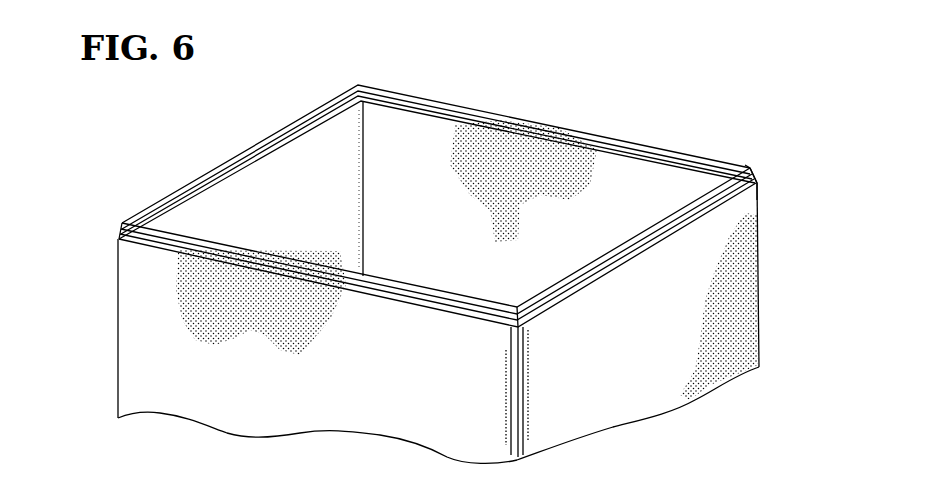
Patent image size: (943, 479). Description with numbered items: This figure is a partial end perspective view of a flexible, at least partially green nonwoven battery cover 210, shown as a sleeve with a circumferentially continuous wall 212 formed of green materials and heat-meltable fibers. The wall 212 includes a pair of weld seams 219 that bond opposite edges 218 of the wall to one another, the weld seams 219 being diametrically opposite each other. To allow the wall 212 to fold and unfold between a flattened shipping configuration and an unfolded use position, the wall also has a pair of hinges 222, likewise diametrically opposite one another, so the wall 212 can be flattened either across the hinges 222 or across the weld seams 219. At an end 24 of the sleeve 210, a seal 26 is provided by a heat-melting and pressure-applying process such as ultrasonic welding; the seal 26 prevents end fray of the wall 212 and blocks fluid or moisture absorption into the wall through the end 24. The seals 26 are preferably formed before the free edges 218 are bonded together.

The cover 210 is at (96, 184).
The seal 26 is at (252, 147).
The end 24 is at (752, 171).
The edges 218 is at (363, 158).
The weld seams 219 is at (363, 178).
The hinges 222 is at (118, 319).
The wall 212 is at (695, 377).